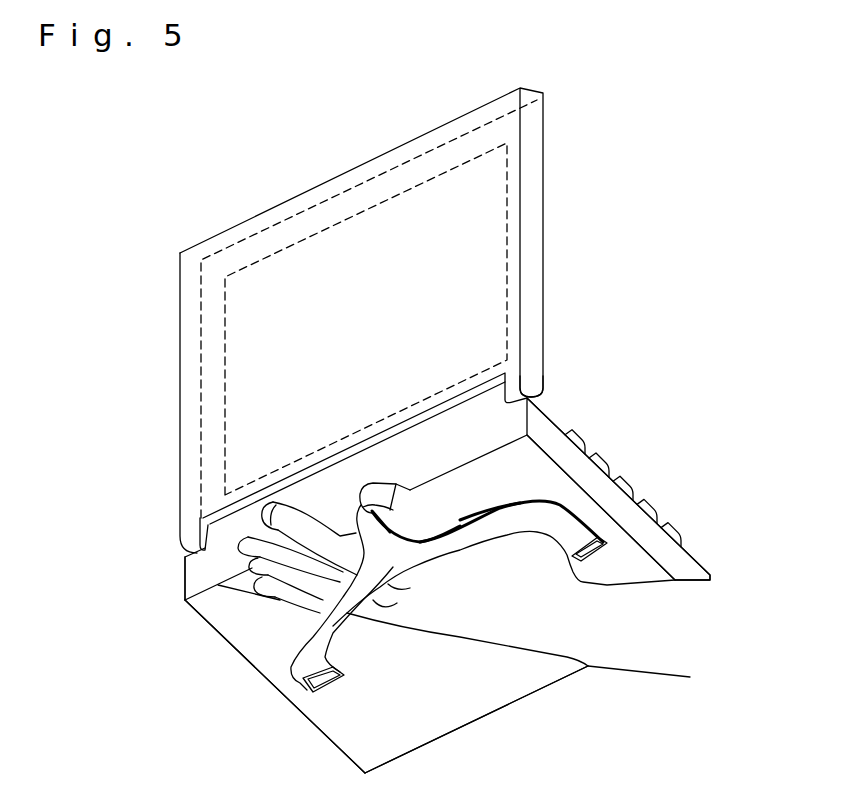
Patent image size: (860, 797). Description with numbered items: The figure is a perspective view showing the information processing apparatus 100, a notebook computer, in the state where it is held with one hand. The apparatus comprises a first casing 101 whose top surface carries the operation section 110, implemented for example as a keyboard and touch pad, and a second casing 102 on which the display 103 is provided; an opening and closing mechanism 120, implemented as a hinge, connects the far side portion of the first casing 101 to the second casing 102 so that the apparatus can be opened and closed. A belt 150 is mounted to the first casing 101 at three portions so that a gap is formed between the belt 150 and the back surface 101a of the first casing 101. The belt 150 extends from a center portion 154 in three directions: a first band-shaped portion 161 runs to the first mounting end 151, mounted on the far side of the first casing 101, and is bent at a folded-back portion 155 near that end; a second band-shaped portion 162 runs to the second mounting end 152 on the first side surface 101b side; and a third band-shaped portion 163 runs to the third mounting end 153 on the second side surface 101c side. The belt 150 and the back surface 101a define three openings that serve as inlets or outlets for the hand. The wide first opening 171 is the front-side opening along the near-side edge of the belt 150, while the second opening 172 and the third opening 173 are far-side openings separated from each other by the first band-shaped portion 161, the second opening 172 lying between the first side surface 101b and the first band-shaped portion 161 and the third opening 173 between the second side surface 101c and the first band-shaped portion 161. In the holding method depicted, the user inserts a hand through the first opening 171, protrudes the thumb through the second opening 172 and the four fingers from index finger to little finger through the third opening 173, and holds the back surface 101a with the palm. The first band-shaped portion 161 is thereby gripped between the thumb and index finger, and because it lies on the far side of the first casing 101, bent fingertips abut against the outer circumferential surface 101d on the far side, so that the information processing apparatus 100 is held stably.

The information processing apparatus 100 is at (294, 145).
The first casing 101 is at (693, 557).
The back surface 101a is at (353, 732).
The first side surface 101b is at (590, 475).
The second side surface 101c is at (233, 652).
The outer circumferential surface 101d is at (228, 537).
The second casing 102 is at (543, 196).
The display 103 is at (512, 233).
The operation section 110 is at (582, 433).
The opening and closing mechanism 120 is at (527, 395).
The belt 150 is at (303, 638).
The first mounting end 151 is at (382, 505).
The second mounting end 152 is at (595, 533).
The third mounting end 153 is at (298, 680).
The center portion 154 is at (397, 568).
The folded-back portion 155 is at (355, 522).
The first band-shaped portion 161 is at (350, 525).
The second band-shaped portion 162 is at (453, 533).
The third band-shaped portion 163 is at (250, 582).
The first opening 171 is at (340, 628).
The second opening 172 is at (480, 510).
The third opening 173 is at (302, 620).